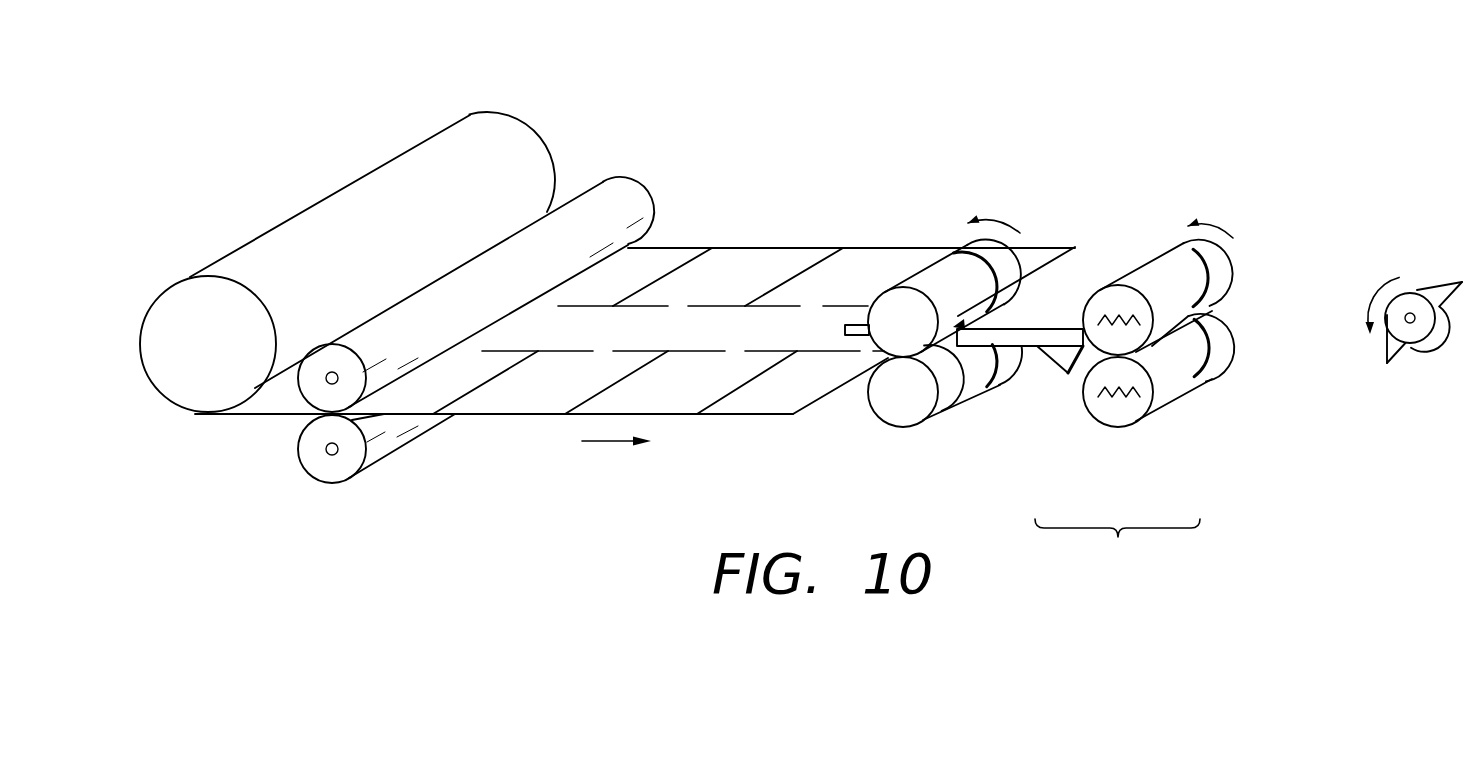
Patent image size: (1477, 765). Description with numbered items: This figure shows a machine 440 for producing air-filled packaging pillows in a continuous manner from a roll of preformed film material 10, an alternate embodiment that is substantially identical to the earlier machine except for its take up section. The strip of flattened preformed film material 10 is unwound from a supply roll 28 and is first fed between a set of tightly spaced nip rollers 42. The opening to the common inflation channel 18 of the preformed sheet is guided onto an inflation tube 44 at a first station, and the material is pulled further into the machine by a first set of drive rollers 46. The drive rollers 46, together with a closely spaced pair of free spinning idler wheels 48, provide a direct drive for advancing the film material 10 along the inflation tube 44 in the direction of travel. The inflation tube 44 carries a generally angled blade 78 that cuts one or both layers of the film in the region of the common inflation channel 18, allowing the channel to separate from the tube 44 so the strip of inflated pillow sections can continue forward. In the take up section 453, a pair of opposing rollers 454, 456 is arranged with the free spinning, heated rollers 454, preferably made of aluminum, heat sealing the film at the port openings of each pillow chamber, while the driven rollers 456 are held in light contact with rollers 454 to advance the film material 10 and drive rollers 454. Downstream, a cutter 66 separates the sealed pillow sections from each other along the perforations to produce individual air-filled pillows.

The preformed film material 10 is at (662, 250).
The common inflation channel 18 is at (808, 323).
The supply roll 28 is at (192, 274).
The nip rollers 42 is at (299, 381).
The inflation tube 44 is at (858, 324).
The drive rollers 46 is at (1007, 283).
The idler wheels 48 is at (990, 400).
The cutter 66 is at (1412, 294).
The blade 78 is at (1064, 358).
The machine 440 is at (1083, 118).
The take up section 453 is at (1117, 554).
The rollers 454 is at (1207, 383).
The rollers 456 is at (1132, 277).